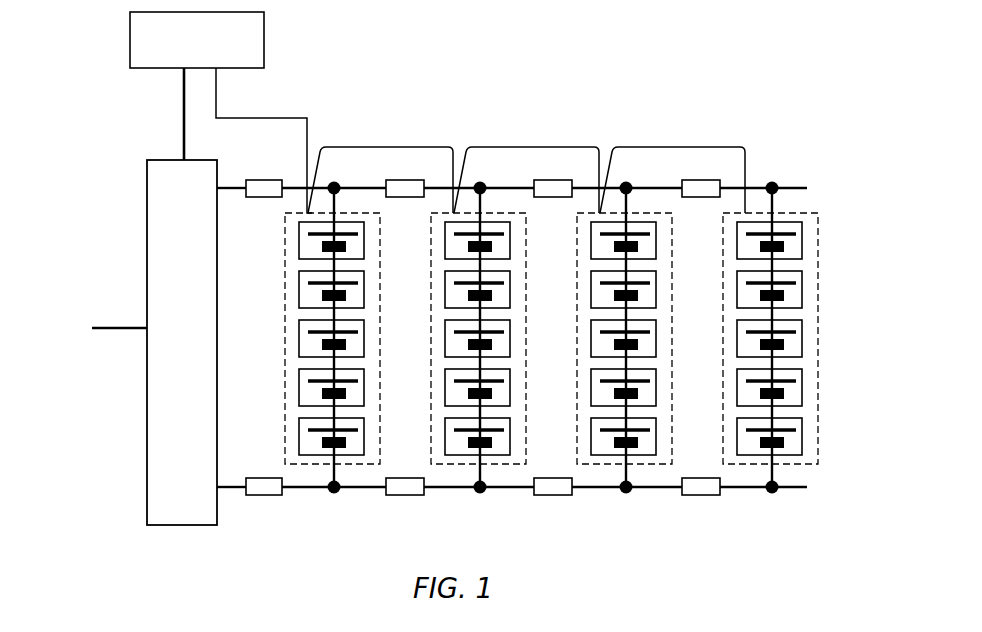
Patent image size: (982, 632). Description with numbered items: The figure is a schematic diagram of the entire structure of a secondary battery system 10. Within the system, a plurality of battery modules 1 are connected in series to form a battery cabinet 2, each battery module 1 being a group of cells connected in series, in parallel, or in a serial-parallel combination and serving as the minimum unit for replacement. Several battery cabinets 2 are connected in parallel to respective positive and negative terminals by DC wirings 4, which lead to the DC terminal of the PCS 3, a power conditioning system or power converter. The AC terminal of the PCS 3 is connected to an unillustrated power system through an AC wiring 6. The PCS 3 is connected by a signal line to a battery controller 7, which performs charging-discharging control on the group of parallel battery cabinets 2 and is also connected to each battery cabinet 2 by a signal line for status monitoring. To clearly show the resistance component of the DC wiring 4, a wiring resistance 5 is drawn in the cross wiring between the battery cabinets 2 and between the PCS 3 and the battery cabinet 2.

The battery module 1 is at (343, 220).
The battery cabinet 2 is at (498, 213).
The PCS (Power Conditioning System) 3 is at (148, 226).
The wiring (DC) 4 is at (512, 515).
The wiring resistance 5 is at (405, 497).
The wiring (AC) 6 is at (107, 327).
The battery controller 7 is at (265, 32).
The secondary battery system 10 is at (522, 43).